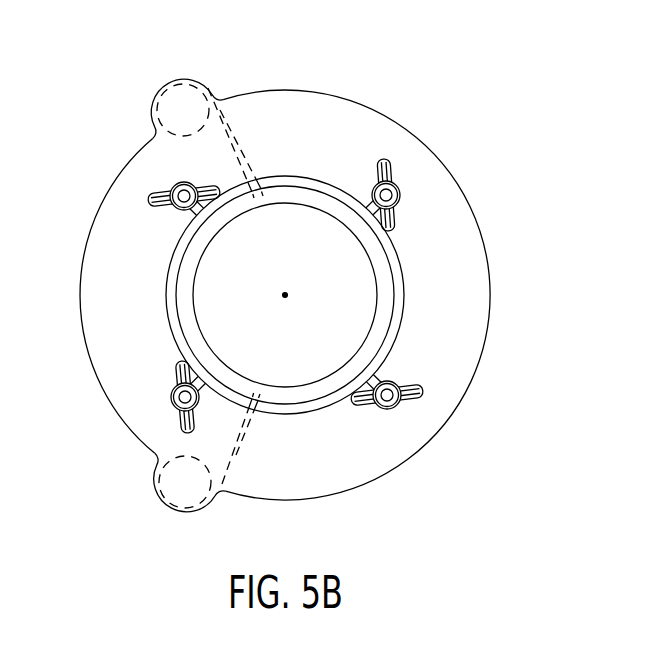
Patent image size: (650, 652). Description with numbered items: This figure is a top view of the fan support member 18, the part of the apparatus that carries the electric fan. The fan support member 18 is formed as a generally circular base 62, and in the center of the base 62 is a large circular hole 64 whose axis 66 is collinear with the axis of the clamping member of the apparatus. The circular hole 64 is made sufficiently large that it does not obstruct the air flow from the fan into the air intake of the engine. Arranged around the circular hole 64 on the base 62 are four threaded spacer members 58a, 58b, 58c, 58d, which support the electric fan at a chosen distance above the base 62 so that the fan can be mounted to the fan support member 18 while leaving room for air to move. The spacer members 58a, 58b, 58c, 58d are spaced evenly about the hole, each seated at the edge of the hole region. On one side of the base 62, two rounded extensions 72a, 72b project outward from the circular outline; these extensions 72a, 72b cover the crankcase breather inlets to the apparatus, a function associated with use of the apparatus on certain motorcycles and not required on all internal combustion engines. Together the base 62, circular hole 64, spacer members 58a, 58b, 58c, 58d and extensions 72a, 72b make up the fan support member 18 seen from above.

The fan support member 18 is at (434, 147).
The base 62 is at (453, 201).
The circular hole 64 is at (250, 304).
The axis 66 is at (288, 291).
The threaded spacer member 58a is at (171, 186).
The threaded spacer member 58b is at (406, 204).
The threaded spacer member 58c is at (397, 377).
The threaded spacer member 58d is at (168, 390).
The extension 72a is at (175, 76).
The extension 72b is at (153, 495).